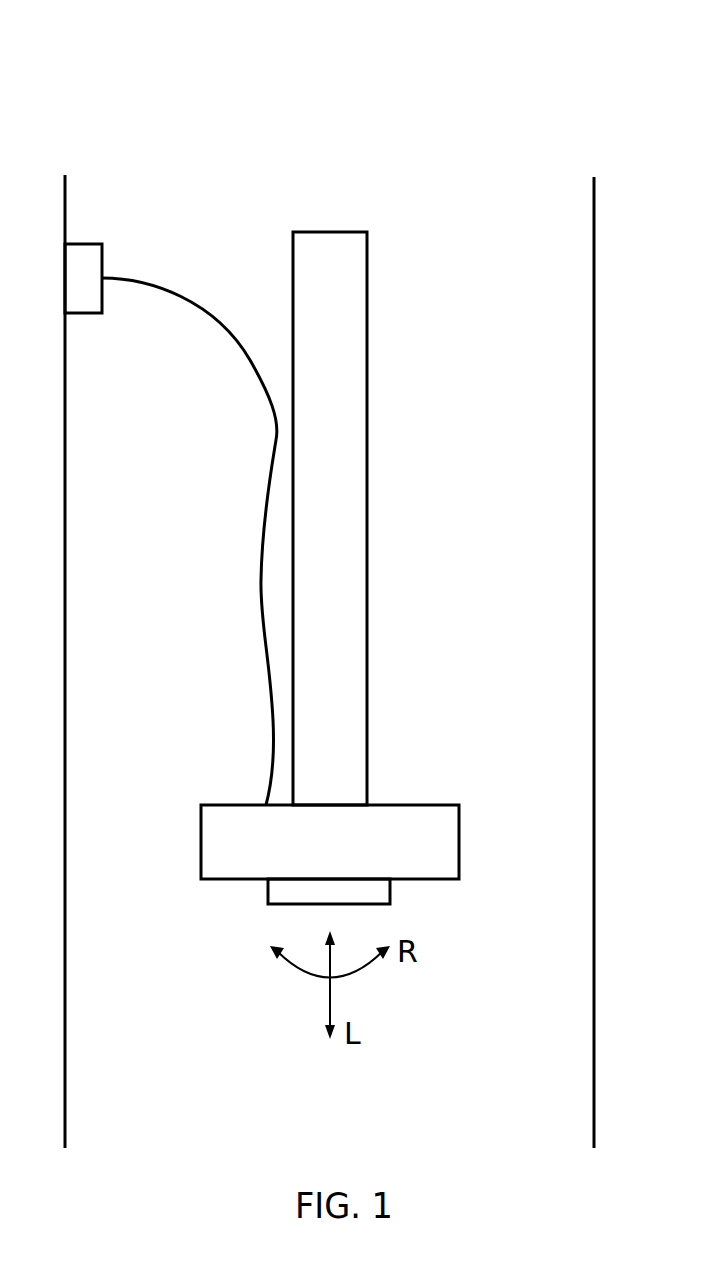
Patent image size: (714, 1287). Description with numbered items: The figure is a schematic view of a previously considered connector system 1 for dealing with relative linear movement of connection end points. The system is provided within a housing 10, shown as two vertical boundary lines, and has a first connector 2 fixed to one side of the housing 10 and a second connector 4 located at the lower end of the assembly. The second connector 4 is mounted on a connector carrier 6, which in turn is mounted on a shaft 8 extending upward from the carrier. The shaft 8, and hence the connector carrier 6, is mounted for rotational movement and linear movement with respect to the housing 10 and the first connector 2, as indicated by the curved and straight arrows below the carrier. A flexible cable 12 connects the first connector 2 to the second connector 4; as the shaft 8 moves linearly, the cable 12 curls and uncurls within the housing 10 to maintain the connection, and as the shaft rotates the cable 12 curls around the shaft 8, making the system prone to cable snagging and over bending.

The connector system 1 is at (567, 69).
The first connector 2 is at (95, 266).
The second connector 4 is at (378, 891).
The connector carrier 6 is at (438, 847).
The shaft 8 is at (350, 311).
The housing 10 is at (594, 225).
The flexible cable 12 is at (200, 311).